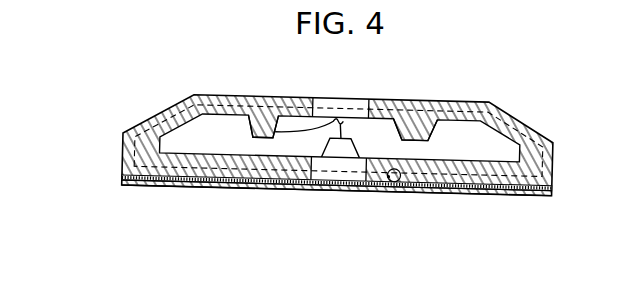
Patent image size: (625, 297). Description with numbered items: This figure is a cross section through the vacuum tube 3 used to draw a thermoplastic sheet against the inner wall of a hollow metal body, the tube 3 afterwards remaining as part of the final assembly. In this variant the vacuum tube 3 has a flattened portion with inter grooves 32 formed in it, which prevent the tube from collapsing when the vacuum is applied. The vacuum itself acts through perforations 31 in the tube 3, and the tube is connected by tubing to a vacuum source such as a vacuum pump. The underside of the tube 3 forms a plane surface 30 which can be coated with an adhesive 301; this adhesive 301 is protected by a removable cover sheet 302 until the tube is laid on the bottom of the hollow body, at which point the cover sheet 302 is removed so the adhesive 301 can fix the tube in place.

The vacuum tube 3 is at (522, 88).
The plane surface 30 is at (403, 190).
The adhesive 301 is at (538, 196).
The removable cover sheet 302 is at (484, 196).
The perforations 31 is at (337, 118).
The inter grooves 32 is at (413, 134).